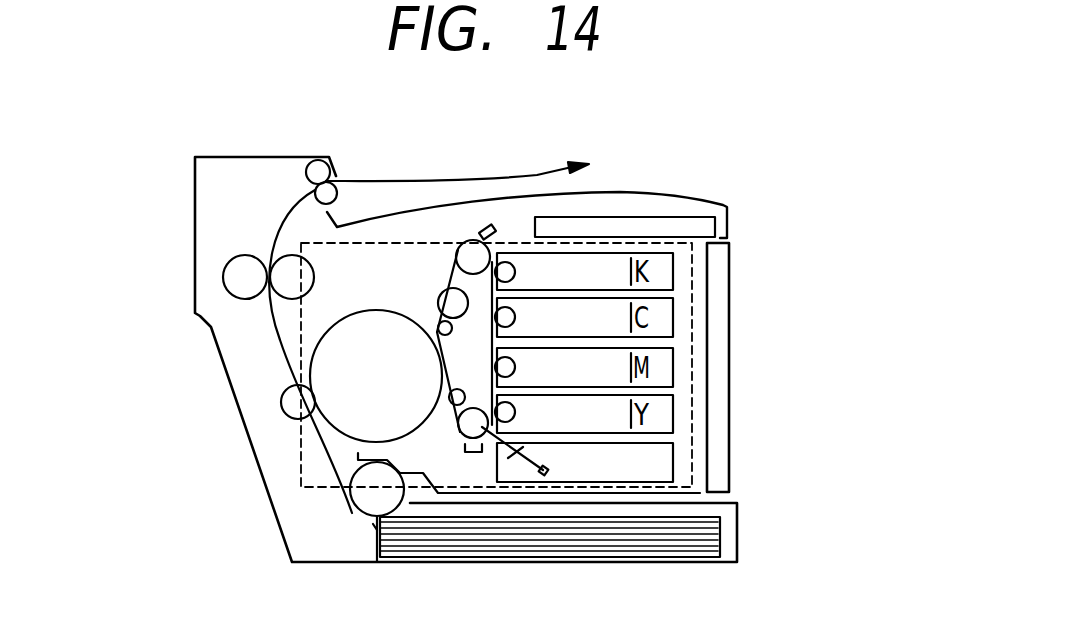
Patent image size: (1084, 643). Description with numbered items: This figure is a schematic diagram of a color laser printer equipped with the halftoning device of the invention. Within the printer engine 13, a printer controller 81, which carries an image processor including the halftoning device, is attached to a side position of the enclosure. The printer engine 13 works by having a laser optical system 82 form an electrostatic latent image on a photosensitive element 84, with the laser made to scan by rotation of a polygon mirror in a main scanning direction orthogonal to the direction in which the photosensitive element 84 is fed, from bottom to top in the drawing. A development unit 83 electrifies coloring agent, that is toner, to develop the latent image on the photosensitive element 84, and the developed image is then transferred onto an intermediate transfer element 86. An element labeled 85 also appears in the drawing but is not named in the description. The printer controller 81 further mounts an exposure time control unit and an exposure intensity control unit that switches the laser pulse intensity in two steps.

The printer engine 13 is at (730, 208).
The printer controller 81 is at (692, 307).
The laser optical system 82 is at (532, 461).
The development unit 83 is at (515, 412).
The photosensitive element 84 is at (453, 282).
The sensor 85 is at (491, 228).
The intermediate transfer element 86 is at (373, 310).